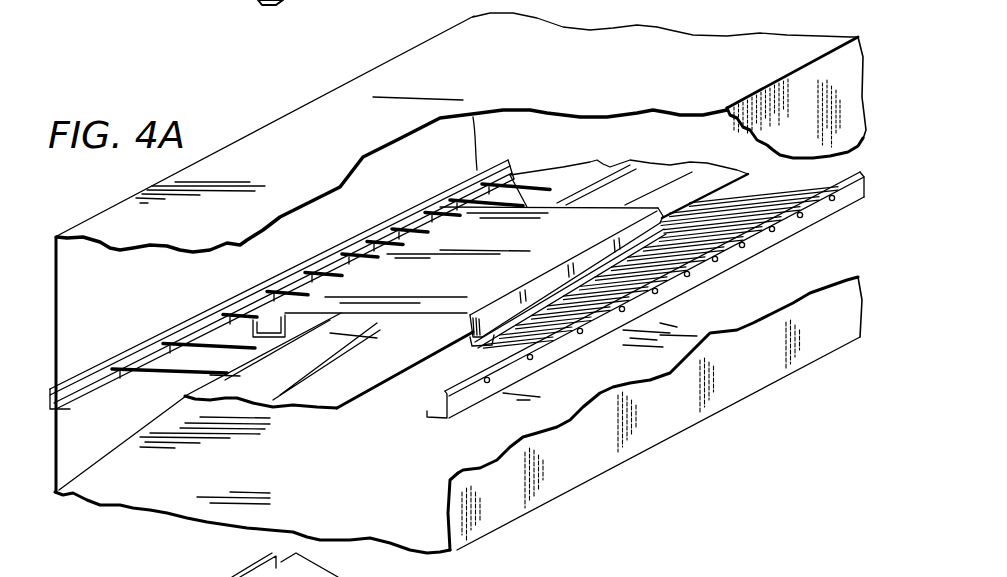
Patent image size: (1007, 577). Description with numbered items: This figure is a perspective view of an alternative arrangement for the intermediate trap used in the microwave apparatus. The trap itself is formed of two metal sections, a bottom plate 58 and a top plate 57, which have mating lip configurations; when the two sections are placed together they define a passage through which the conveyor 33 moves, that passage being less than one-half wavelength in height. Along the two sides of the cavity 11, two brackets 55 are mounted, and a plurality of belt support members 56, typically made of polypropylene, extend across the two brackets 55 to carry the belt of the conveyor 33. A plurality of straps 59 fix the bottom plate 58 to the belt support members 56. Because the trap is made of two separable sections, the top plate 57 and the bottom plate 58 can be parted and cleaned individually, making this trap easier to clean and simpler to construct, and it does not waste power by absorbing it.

The cavity 11 is at (656, 56).
The conveyor 33 is at (672, 183).
The brackets 55 is at (92, 384).
The belt support members 56 is at (248, 349).
The top plate 57 is at (487, 286).
The bottom plate 58 is at (583, 294).
The straps 59 is at (683, 236).